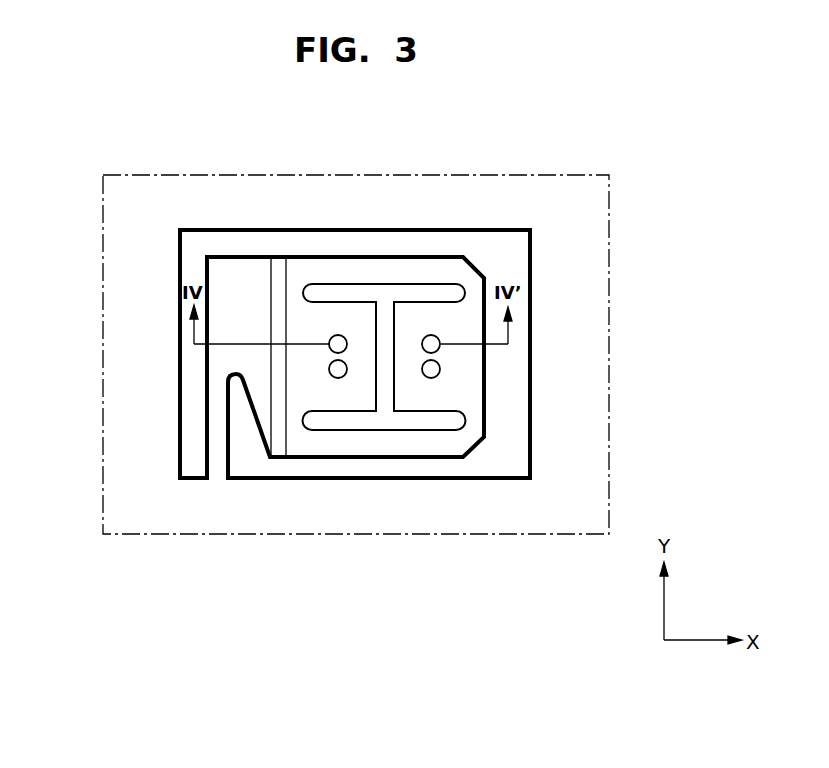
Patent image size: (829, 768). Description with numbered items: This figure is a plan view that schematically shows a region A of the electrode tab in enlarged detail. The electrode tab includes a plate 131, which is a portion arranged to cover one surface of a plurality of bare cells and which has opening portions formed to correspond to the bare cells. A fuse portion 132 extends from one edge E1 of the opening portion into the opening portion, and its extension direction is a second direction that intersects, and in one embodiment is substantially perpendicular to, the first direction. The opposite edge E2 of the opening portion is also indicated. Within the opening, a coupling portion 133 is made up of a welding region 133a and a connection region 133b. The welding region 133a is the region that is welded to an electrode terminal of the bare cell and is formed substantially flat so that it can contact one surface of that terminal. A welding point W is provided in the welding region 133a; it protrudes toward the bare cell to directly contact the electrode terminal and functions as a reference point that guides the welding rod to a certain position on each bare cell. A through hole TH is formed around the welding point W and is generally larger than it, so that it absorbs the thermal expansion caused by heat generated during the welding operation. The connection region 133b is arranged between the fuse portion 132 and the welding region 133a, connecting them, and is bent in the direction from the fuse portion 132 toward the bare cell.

The plate 131 is at (143, 499).
The fuse portion 132 is at (217, 432).
The coupling portion 133 is at (463, 396).
The welding region 133a is at (475, 374).
The connection region 133b is at (263, 352).
The through hole TH is at (385, 293).
The welding point W is at (440, 349).
The one edge of the opening portion E1 is at (335, 478).
The second edge E2 is at (328, 230).
The region A is at (609, 218).